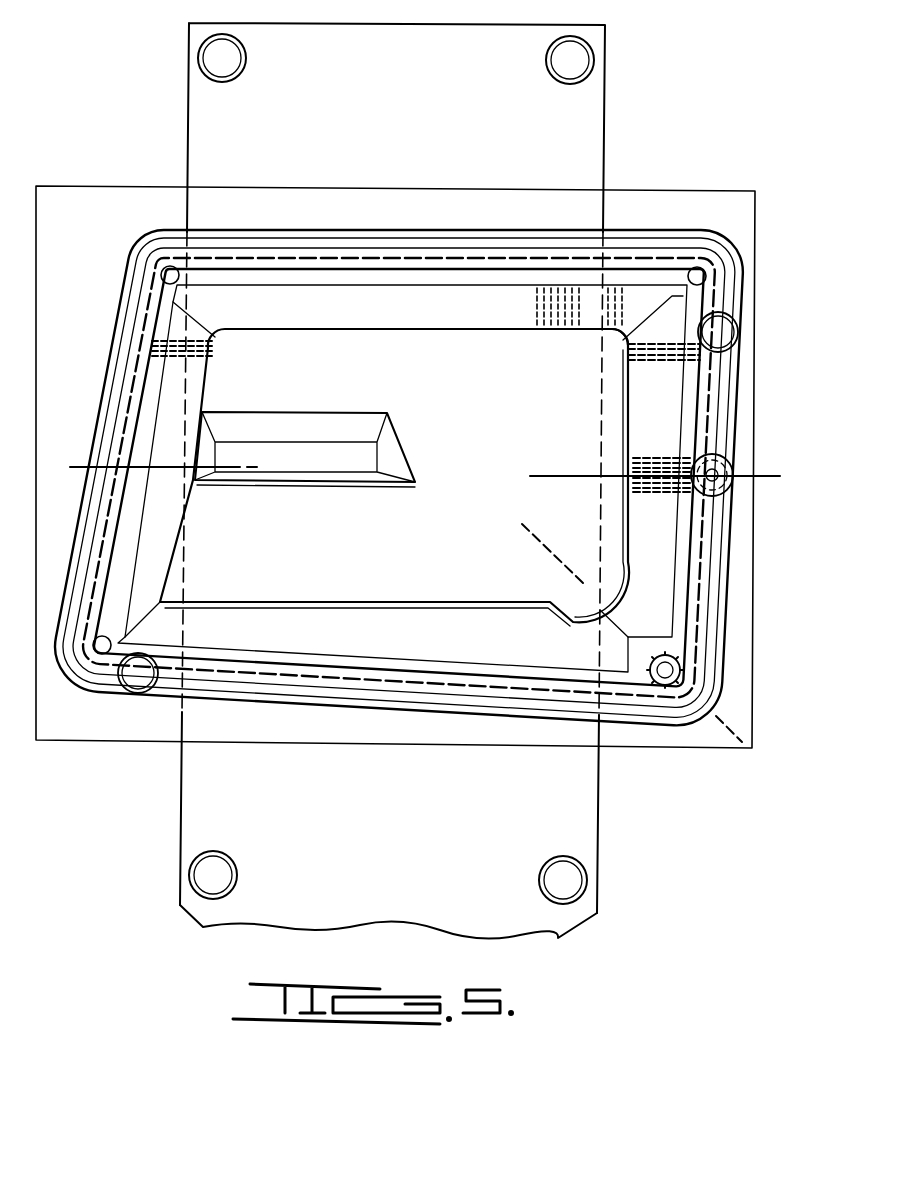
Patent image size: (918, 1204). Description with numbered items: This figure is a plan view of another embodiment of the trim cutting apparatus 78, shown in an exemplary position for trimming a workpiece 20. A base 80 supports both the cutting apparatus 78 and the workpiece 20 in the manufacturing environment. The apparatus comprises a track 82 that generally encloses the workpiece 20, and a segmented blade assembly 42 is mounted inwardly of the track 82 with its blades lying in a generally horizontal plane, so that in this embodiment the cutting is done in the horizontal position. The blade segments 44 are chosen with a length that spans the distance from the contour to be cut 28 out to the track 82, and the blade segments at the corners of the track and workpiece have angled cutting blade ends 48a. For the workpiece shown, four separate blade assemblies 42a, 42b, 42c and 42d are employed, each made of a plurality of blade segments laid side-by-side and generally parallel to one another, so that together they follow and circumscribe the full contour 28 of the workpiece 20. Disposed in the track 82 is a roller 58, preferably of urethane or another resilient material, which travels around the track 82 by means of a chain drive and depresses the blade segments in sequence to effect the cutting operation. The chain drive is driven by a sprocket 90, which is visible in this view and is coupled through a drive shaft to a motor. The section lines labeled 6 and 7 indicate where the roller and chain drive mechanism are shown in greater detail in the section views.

The workpiece 20 is at (415, 547).
The contour to be cut 28 is at (396, 334).
The segmented blade assembly 42 is at (663, 494).
The blade assembly 42a is at (410, 314).
The blade assembly 42b is at (180, 515).
The blade assembly 42c is at (430, 642).
The blade assembly 42d is at (682, 574).
The blade segments 44 is at (650, 455).
The angled cutting blade ends 48a is at (621, 342).
The roller 58 is at (724, 486).
The trim cutting apparatus 78 is at (641, 764).
The base 80 is at (598, 913).
The track 82 is at (88, 690).
The sprocket 90 is at (661, 652).
The section line 6- 6 is at (782, 510).
The section line 7- 7 is at (554, 500).